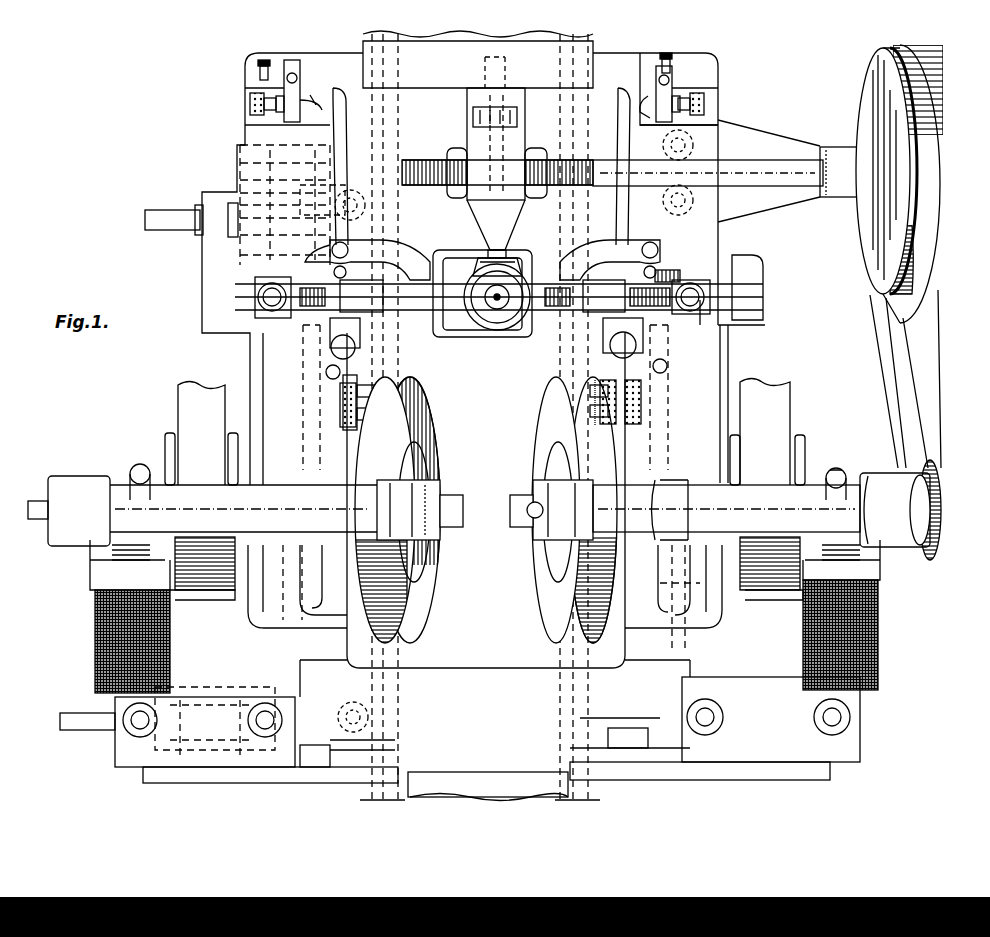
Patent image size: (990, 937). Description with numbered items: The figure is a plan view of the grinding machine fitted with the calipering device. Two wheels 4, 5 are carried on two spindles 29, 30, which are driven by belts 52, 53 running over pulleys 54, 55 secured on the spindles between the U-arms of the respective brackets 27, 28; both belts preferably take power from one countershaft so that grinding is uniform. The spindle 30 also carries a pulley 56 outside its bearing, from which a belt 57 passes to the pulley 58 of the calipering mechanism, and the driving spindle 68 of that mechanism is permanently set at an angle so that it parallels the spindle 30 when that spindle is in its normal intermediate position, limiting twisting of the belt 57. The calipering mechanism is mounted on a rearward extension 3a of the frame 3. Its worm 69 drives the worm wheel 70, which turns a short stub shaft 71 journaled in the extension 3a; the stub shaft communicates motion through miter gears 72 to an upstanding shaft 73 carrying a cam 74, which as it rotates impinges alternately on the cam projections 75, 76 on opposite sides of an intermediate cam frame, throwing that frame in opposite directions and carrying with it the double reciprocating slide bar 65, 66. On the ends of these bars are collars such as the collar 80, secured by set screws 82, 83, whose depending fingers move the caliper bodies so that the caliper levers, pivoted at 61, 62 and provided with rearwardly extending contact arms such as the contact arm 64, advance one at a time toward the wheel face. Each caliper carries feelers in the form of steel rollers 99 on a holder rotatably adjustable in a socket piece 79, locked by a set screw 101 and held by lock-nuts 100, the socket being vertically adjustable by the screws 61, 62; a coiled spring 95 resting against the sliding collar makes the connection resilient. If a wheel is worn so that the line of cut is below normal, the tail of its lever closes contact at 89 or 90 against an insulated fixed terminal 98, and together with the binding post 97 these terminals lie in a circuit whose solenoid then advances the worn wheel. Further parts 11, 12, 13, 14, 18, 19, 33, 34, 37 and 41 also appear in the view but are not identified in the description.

The frame 3 is at (465, 415).
The rearward extension of the frame 3a is at (720, 80).
The wheel 4 is at (432, 420).
The wheel 5 is at (536, 440).
The base 11 is at (322, 750).
The bearing 12 is at (330, 205).
The bearing housing 13 is at (236, 688).
The guide housing 14 is at (250, 192).
The shaft 18 is at (90, 731).
The shaft 19 is at (210, 212).
The bracket 27 is at (94, 643).
The bracket 28 is at (880, 598).
The spindle 29 is at (450, 494).
The spindle 30 is at (521, 494).
The spindle 33 is at (690, 482).
The collar 34 is at (840, 470).
The base block 37 is at (715, 728).
The bracket 41 is at (596, 752).
The belt 52 is at (205, 486).
The belt 53 is at (770, 485).
The pulley 54 is at (170, 435).
The pulley 55 is at (800, 436).
The pulley 56 is at (936, 470).
The belt 57 is at (870, 346).
The pulley 58 is at (876, 230).
The pivot 61 is at (330, 350).
The pivot 62 is at (605, 345).
The contact arm 64 is at (620, 130).
The slide bar 65 is at (346, 132).
The slide bar 66 is at (725, 326).
The spindle 68 is at (770, 130).
The worm 69 is at (462, 152).
The worm wheel 70 is at (450, 168).
The stub shaft 71 is at (488, 218).
The miter gears 72 is at (510, 266).
The upstanding shaft 73 is at (494, 325).
The cam 74 is at (467, 338).
The cam projection 75 is at (458, 270).
The cam projection 76 is at (505, 330).
The socket piece 79 is at (380, 368).
The collar 80 is at (705, 288).
The set screw 82 is at (250, 320).
The set screw 83 is at (764, 270).
The contact 89 is at (320, 100).
The contact 90 is at (652, 100).
The coiled spring 95 is at (668, 283).
The binding post 97 is at (655, 242).
The insulated fixed terminal 98 is at (672, 80).
The steel rollers 99 is at (590, 415).
The lock-nuts 100 is at (345, 435).
The set screw 101 is at (326, 376).